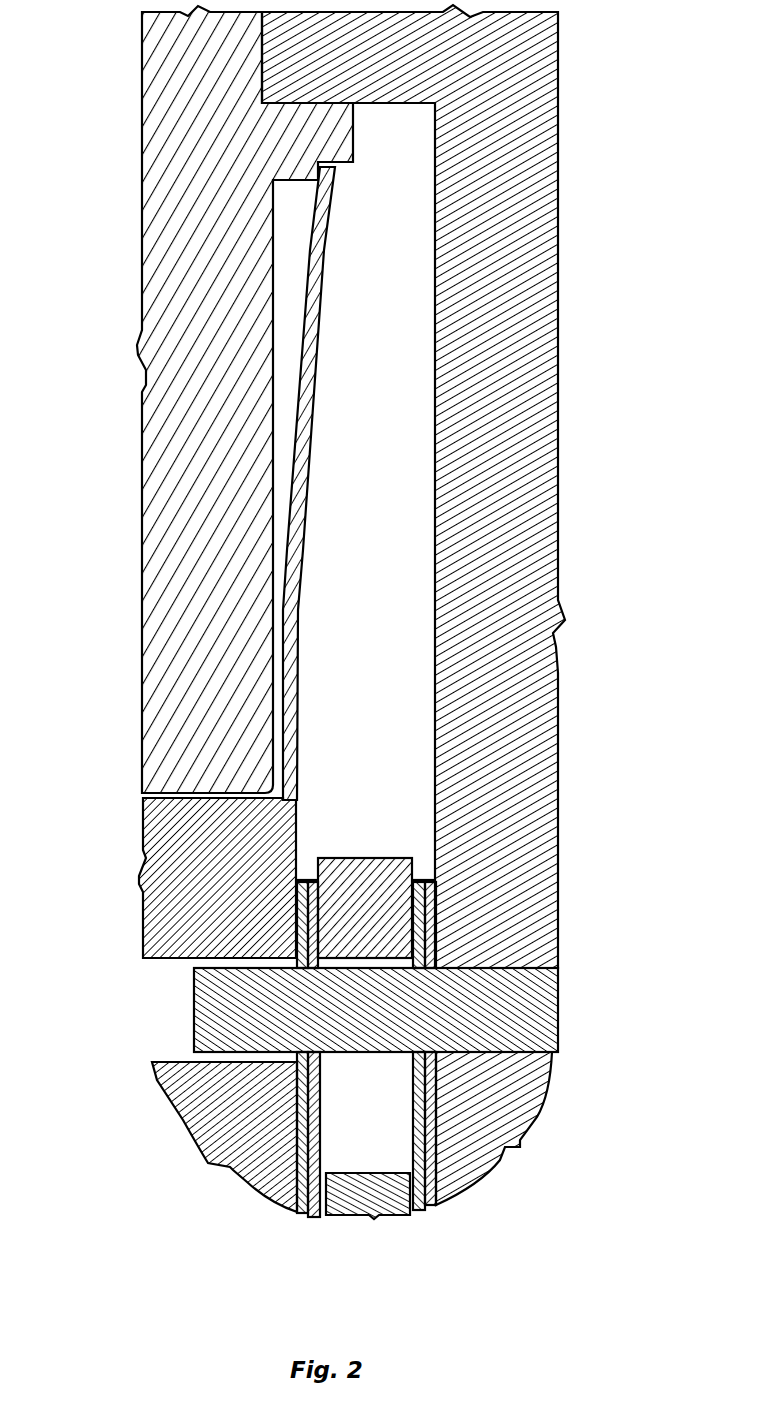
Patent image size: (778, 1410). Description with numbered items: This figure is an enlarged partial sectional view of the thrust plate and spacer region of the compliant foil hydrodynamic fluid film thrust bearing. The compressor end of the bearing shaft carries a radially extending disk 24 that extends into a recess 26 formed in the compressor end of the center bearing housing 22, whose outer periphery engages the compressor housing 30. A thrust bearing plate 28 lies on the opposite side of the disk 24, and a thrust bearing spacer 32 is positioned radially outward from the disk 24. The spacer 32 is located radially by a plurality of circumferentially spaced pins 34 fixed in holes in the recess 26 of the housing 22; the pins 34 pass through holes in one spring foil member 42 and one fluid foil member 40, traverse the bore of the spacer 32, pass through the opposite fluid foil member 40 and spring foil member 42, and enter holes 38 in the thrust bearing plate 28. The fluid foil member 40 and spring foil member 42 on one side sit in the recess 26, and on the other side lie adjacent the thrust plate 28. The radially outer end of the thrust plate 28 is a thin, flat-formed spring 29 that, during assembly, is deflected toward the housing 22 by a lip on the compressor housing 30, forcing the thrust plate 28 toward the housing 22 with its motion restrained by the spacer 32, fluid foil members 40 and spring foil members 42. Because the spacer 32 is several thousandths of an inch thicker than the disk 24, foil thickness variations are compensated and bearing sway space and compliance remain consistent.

The center bearing housing 22 is at (558, 470).
The bearing shaft disk 24 is at (365, 1217).
The recess 26 is at (393, 594).
The thrust bearing plate 28 is at (143, 830).
The thrust bearing plate spring 29 is at (317, 243).
The compressor housing 30 is at (142, 418).
The thrust bearing spacer 32 is at (402, 858).
The pins 34 is at (194, 998).
The holes 38 is at (167, 1060).
The thrust bearing fluid foil member 40 is at (313, 1218).
The thrust bearing spring foil member 42 is at (300, 1215).